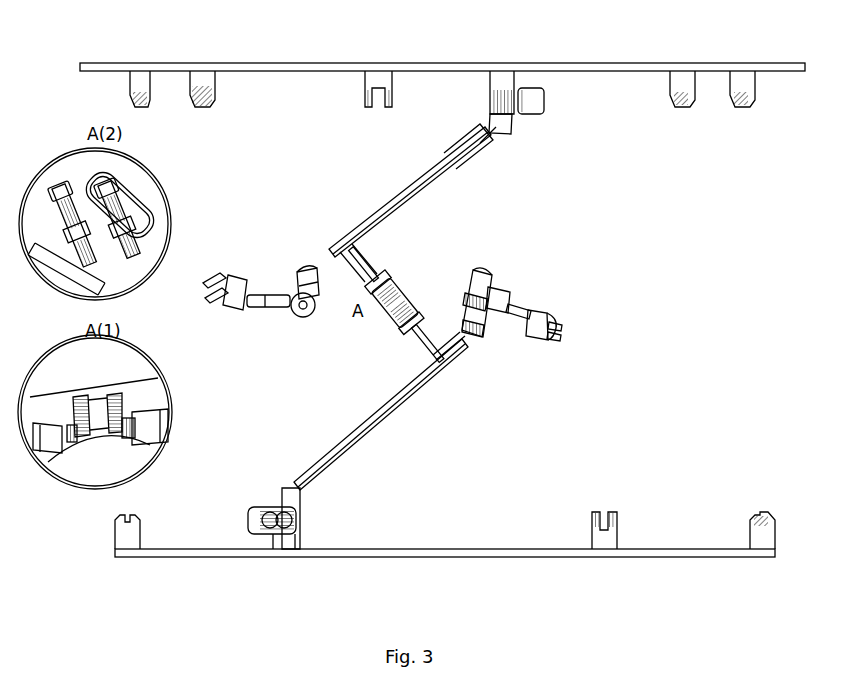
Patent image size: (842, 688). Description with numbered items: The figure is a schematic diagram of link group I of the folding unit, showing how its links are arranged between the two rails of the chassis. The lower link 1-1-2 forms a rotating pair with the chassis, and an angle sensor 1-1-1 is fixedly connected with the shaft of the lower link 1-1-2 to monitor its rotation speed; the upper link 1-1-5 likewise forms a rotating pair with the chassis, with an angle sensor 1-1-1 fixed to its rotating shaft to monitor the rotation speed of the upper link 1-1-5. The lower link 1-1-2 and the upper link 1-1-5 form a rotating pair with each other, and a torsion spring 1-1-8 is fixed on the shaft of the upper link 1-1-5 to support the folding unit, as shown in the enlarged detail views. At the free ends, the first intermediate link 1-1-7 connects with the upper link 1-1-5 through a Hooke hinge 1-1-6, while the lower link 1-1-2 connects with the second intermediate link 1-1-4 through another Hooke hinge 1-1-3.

The angle sensor 1-1-1 is at (540, 100).
The lower link 1 1-1-2 is at (360, 430).
The Hooke hinge 2 1-1-3 is at (465, 336).
The intermediate link 2 1-1-4 is at (511, 315).
The upper link 1-1-5 is at (488, 118).
The Hooke hinge 3 1-1-6 is at (316, 262).
The intermediate link 1 1-1-7 is at (265, 302).
The torsion spring 1-1-8 is at (130, 420).